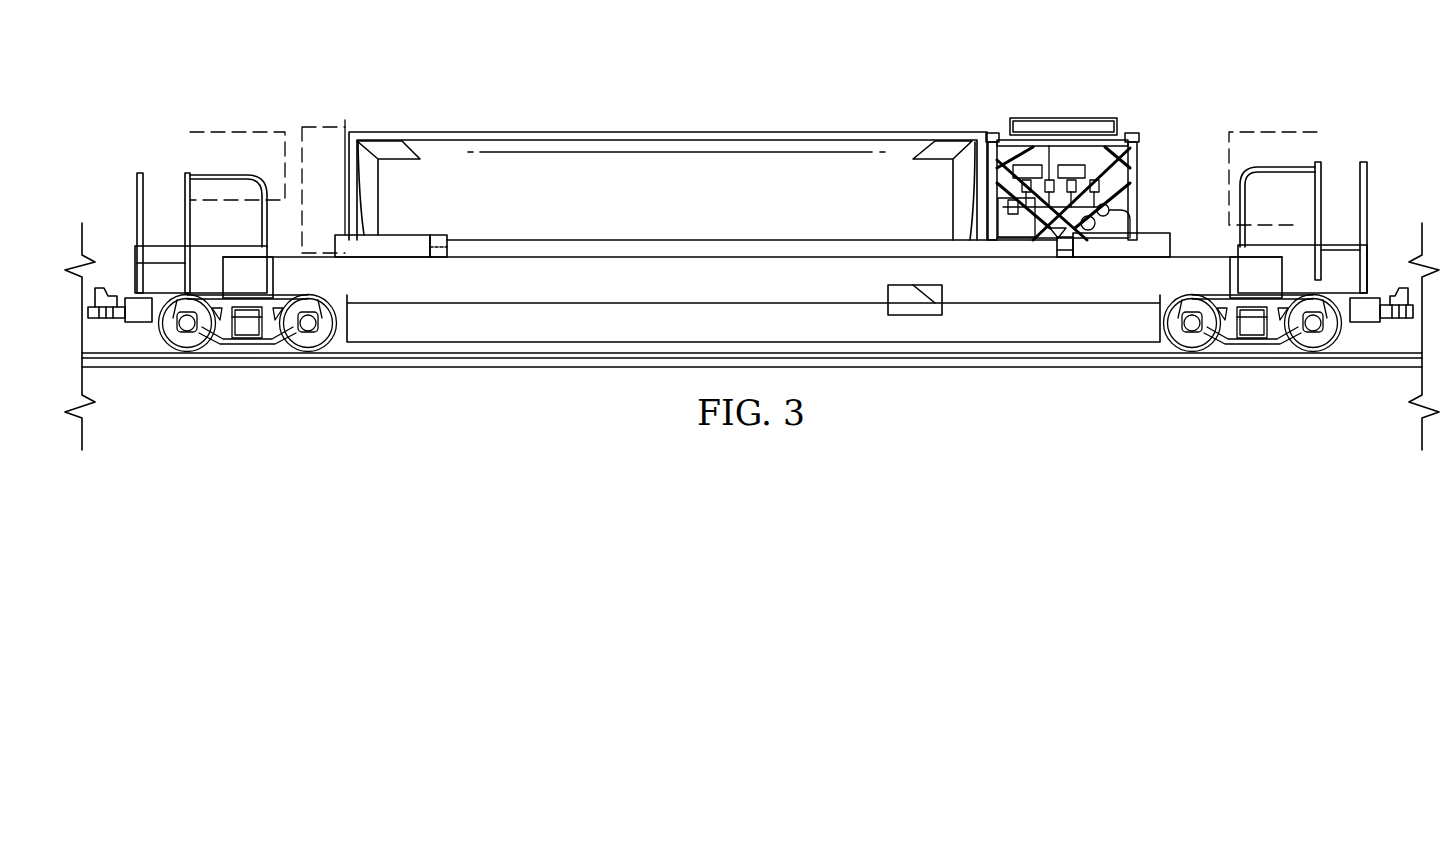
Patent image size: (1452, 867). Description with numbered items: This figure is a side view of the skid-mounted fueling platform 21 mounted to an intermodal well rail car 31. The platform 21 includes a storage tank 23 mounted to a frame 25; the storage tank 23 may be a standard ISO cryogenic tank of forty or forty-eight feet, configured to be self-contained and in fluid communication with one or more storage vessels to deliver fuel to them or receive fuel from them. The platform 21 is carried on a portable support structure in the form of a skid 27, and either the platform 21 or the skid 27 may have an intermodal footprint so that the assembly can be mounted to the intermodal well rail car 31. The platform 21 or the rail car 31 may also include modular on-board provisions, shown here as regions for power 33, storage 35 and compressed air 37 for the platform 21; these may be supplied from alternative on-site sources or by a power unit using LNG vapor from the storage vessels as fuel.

The platform 21 is at (555, 100).
The storage tank 23 is at (681, 205).
The frame 25 is at (897, 131).
The skid 27 is at (1063, 117).
The intermodal well rail car 31 is at (1386, 230).
The power 33 is at (222, 131).
The storage 35 is at (1307, 131).
The compressed air 37 is at (318, 127).